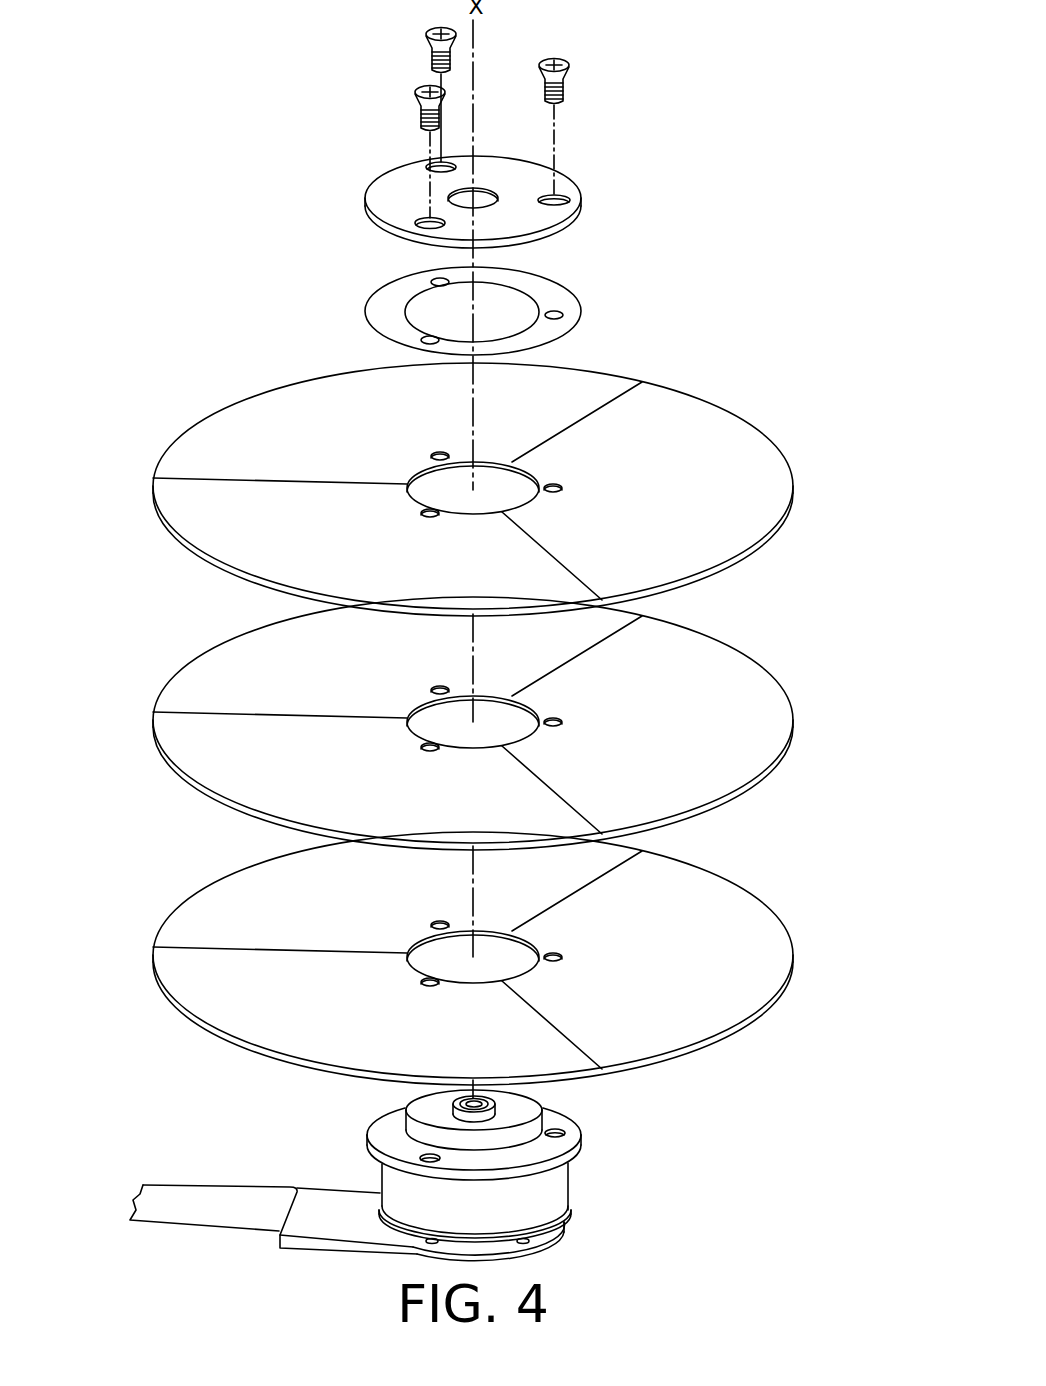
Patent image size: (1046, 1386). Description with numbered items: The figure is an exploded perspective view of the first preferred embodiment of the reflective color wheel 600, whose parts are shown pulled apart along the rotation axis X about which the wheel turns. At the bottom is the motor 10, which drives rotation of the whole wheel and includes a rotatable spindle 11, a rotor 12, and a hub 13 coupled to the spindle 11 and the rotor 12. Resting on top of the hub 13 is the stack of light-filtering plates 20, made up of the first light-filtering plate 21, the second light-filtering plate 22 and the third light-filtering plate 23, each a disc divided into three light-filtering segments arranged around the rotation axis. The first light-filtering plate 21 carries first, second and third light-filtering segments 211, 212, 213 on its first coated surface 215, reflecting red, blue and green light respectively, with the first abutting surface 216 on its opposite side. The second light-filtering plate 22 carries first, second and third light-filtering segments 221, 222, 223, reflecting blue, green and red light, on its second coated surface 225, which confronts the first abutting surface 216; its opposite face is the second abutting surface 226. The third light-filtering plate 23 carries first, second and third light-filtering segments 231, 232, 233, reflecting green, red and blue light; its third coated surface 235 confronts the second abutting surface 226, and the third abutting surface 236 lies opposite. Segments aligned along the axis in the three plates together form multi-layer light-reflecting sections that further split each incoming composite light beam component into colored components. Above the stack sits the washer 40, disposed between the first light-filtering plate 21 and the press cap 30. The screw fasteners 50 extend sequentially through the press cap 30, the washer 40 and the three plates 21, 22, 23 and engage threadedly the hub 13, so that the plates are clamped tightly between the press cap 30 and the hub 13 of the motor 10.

The reflective color wheel 600 is at (200, 155).
The screw fasteners 50 is at (427, 26).
The press cap 30 is at (567, 185).
The washer 40 is at (387, 300).
The stack of light-filtering plates 20 is at (657, 368).
The first light-filtering plate 21 is at (476, 425).
The first light-filtering segment 211 is at (730, 452).
The second light-filtering segment 212 is at (264, 534).
The third light-filtering segment 213 is at (296, 423).
The first coated surface 215 is at (595, 381).
The first abutting surface 216 is at (760, 550).
The second light-filtering plate 22 is at (489, 713).
The first light-filtering segment 221 is at (711, 702).
The second light-filtering segment 222 is at (258, 768).
The third light-filtering segment 223 is at (220, 690).
The second coated surface 225 is at (628, 640).
The second abutting surface 226 is at (765, 780).
The third light-filtering plate 23 is at (479, 949).
The first light-filtering segment 231 is at (740, 948).
The second light-filtering segment 232 is at (258, 1010).
The third light-filtering segment 233 is at (240, 907).
The third coated surface 235 is at (655, 875).
The third abutting surface 236 is at (757, 1020).
The motor 10 is at (604, 1170).
The rotatable spindle 11 is at (497, 1103).
The rotor 12 is at (545, 1193).
The hub 13 is at (380, 1152).